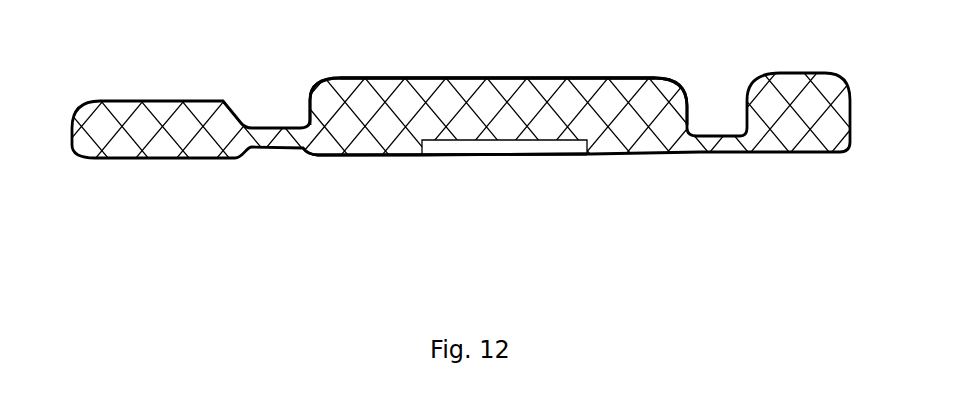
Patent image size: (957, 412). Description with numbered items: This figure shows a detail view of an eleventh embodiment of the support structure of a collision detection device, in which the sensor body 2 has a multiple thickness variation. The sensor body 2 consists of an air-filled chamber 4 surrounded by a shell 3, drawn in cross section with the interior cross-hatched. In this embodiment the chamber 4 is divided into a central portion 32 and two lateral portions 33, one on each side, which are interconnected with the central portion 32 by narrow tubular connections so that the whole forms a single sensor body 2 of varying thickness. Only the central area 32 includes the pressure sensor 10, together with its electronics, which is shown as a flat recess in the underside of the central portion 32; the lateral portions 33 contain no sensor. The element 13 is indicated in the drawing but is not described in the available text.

The sensor body 2 is at (323, 215).
The shell 3 is at (341, 75).
The chamber 4 is at (364, 143).
The pressure sensor 10 is at (522, 153).
The foam material 13 is at (419, 70).
The central portion 32 is at (501, 54).
The lateral portions 33 is at (166, 78).